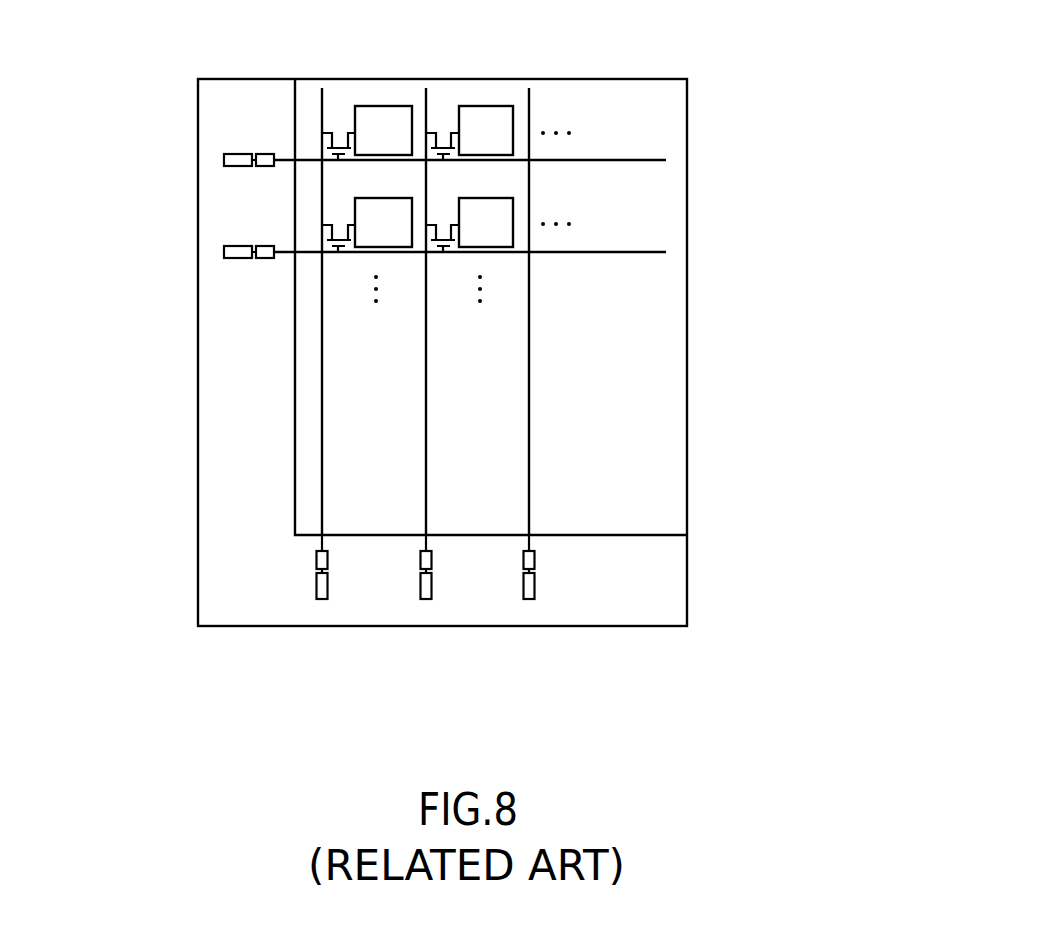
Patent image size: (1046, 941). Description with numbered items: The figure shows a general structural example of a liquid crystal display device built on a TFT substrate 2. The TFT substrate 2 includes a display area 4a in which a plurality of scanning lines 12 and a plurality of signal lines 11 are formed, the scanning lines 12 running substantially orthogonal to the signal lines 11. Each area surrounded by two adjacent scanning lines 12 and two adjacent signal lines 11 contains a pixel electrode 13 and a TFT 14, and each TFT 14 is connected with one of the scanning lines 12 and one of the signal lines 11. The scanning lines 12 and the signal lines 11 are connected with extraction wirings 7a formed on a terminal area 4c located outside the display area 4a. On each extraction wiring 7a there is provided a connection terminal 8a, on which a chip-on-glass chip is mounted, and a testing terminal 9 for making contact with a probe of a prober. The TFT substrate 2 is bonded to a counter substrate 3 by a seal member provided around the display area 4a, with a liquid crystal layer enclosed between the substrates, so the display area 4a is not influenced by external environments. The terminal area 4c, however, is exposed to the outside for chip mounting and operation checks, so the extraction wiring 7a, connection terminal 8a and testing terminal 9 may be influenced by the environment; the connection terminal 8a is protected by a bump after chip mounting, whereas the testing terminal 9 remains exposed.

The TFT substrate 2 is at (197, 199).
The counter substrate 3 is at (293, 108).
The display area 4a is at (632, 375).
The terminal area 4c is at (630, 588).
The extraction wiring 7a is at (280, 253).
The connection terminal 8a is at (263, 257).
The testing terminal 9 is at (226, 252).
The signal line 11 is at (530, 101).
The scanning line 12 is at (635, 158).
The pixel electrode 13 is at (372, 112).
The TFT 14 is at (452, 132).